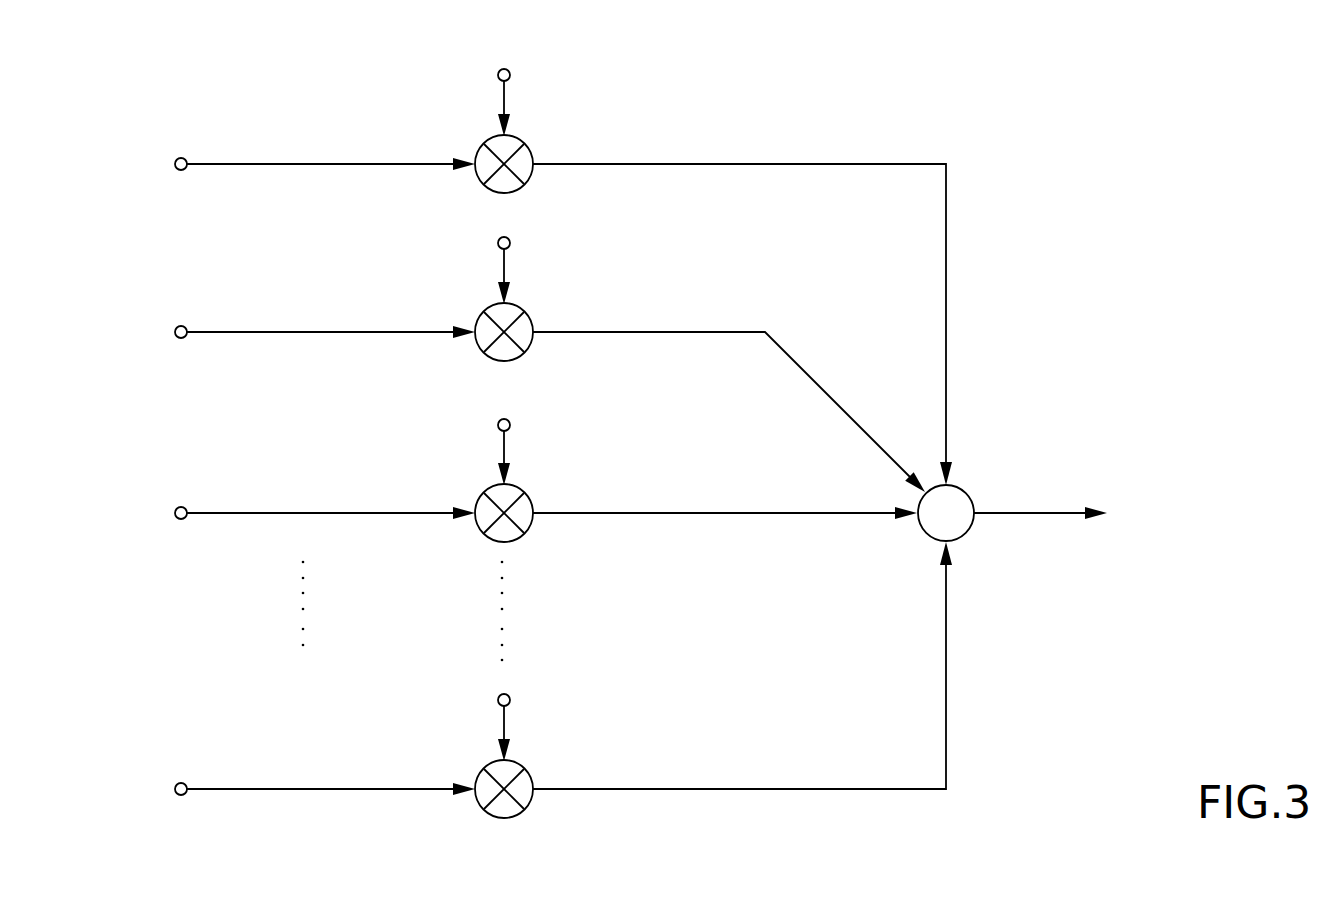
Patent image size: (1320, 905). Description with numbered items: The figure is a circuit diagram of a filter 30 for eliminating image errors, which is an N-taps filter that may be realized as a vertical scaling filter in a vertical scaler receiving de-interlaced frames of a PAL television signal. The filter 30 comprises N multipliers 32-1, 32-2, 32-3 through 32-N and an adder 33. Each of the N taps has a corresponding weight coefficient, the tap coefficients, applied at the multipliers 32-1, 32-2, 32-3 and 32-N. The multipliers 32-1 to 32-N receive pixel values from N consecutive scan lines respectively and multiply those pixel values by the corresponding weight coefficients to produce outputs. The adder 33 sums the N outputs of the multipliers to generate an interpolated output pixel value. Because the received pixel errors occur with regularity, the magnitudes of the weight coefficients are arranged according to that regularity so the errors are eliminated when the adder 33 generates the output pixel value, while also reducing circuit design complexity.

The filter 30 is at (638, 430).
The multiplier 32-1 is at (514, 138).
The multiplier 32-2 is at (514, 306).
The multiplier 32-3 is at (514, 487).
The multiplier 32-N is at (514, 763).
The adder 33 is at (958, 486).